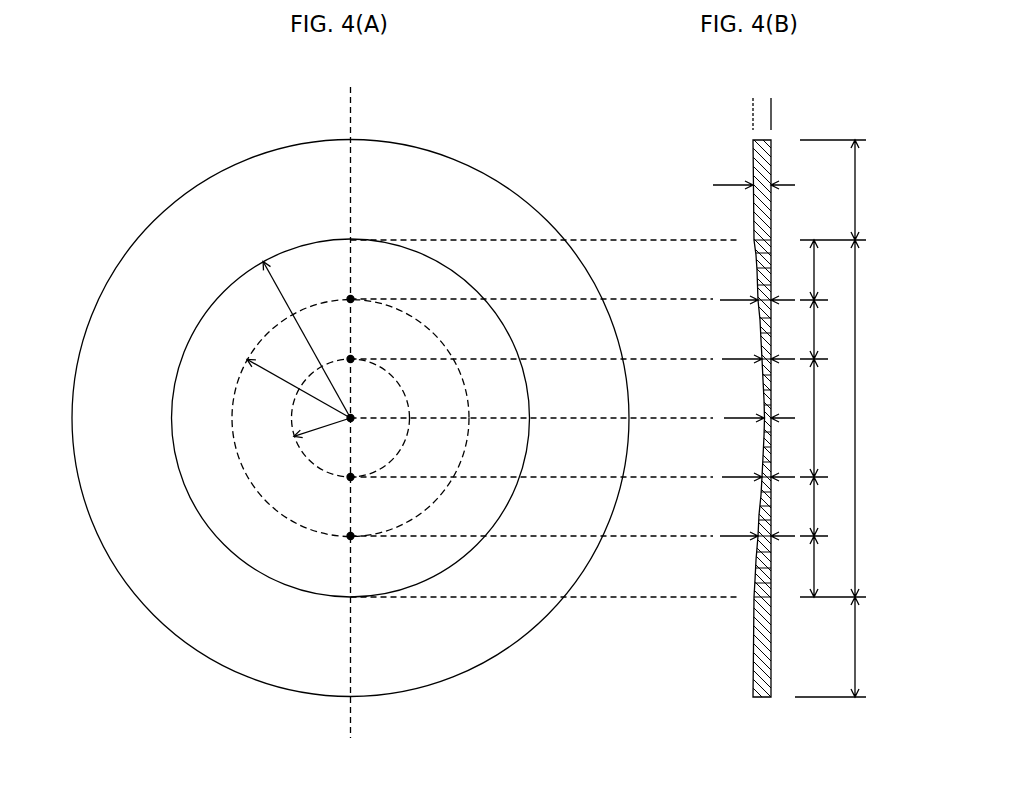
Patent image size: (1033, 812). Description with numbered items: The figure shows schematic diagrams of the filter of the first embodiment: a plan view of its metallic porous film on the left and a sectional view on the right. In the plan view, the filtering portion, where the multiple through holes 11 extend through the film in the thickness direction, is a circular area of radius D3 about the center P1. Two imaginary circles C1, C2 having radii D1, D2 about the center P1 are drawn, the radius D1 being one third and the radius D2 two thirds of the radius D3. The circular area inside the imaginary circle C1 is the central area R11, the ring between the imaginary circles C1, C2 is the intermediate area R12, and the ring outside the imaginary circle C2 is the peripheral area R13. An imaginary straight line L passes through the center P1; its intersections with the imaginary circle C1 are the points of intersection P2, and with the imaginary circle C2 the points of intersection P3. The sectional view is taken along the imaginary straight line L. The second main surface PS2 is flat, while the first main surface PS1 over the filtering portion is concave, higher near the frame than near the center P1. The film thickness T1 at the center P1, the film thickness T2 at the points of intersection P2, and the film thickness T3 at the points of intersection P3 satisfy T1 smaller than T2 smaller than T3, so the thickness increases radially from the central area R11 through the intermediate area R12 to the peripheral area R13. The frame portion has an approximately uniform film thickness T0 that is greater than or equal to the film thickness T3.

The through holes 11 is at (758, 326).
The imaginary straight line L is at (351, 122).
The imaginary circle C1 is at (298, 449).
The imaginary circle C2 is at (233, 428).
The radius D1 is at (322, 435).
The radius D2 is at (299, 388).
The radius D3 is at (303, 340).
The center P1 is at (353, 417).
The points of intersection P2 is at (352, 359).
The points of intersection P3 is at (352, 299).
The first main surface PS1 is at (753, 122).
The second main surface PS2 is at (771, 122).
The film thickness T0 is at (754, 178).
The film thickness T1 is at (759, 410).
The film thickness T2 is at (758, 410).
The film thickness T3 is at (757, 410).
The central area R11 is at (829, 418).
The intermediate area R12 is at (824, 418).
The peripheral area R13 is at (824, 418).